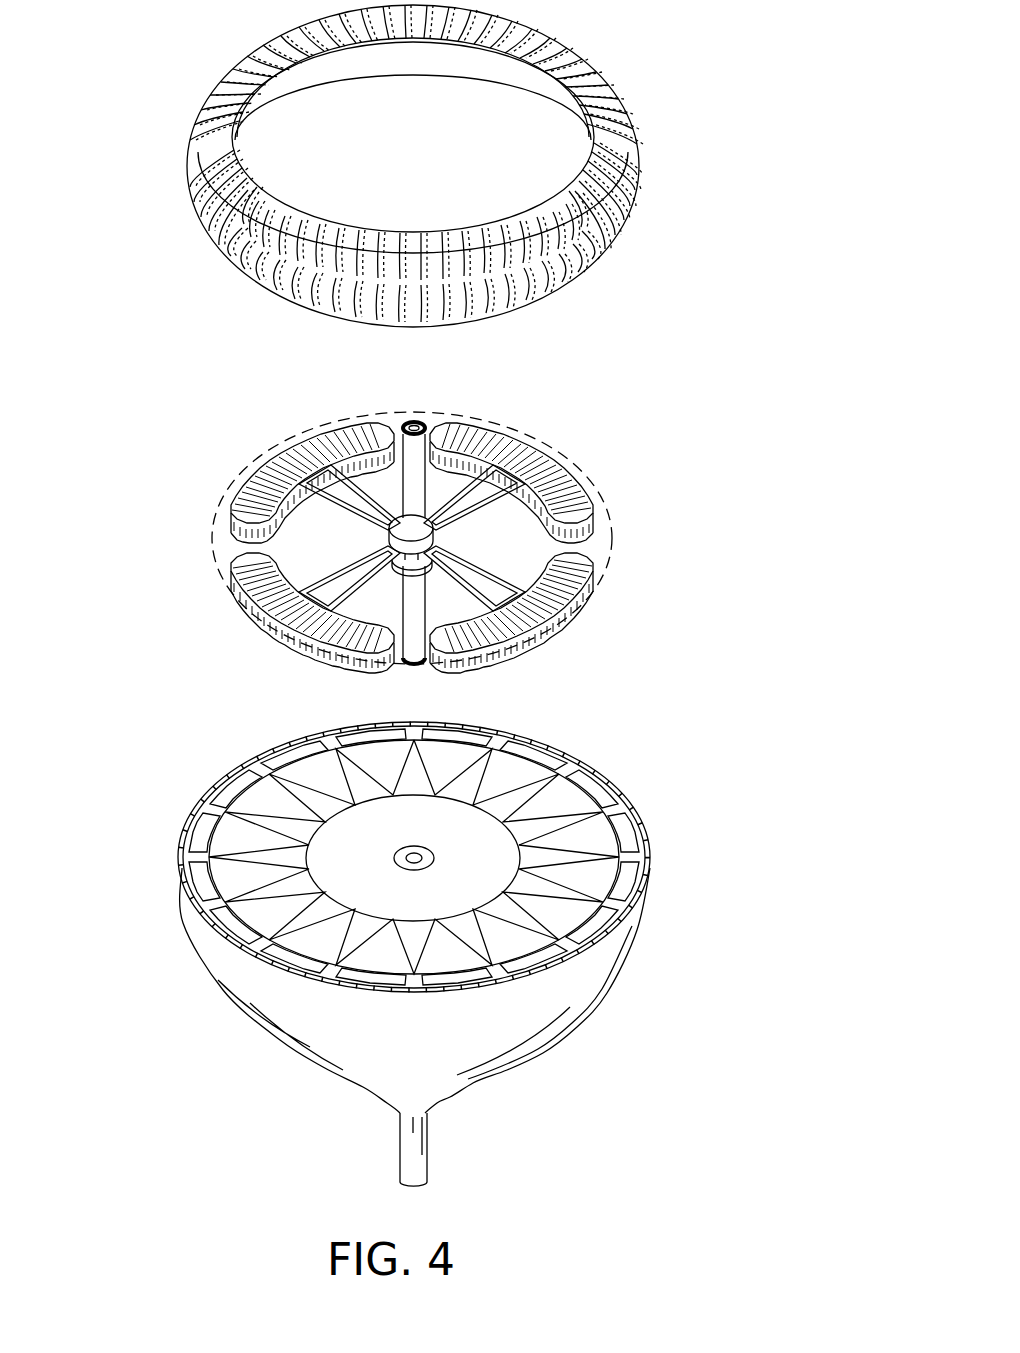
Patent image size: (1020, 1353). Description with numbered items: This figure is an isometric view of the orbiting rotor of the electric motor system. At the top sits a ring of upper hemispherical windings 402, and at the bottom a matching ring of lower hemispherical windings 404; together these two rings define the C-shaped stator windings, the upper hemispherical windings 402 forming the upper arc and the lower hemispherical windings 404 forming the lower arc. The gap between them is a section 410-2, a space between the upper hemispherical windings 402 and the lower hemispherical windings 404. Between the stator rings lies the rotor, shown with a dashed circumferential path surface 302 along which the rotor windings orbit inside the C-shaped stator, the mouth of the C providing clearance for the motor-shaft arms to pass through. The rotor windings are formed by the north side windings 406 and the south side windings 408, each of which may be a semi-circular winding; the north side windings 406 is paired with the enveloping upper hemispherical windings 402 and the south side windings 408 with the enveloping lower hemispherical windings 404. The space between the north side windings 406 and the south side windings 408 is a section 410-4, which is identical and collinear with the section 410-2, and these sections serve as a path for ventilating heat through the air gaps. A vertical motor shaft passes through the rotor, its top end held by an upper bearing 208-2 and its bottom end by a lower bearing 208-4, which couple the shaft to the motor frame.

The upper hemispherical windings 402 is at (620, 137).
The section 410-2 is at (635, 182).
The lower hemispherical windings 404 is at (589, 279).
The circumferential path surface 302 is at (615, 547).
The upper bearing 208-2 is at (432, 419).
The lower bearing 208-4 is at (427, 671).
The north side windings 406 is at (258, 581).
The south side windings 408 is at (297, 643).
The section 410-4 is at (240, 594).